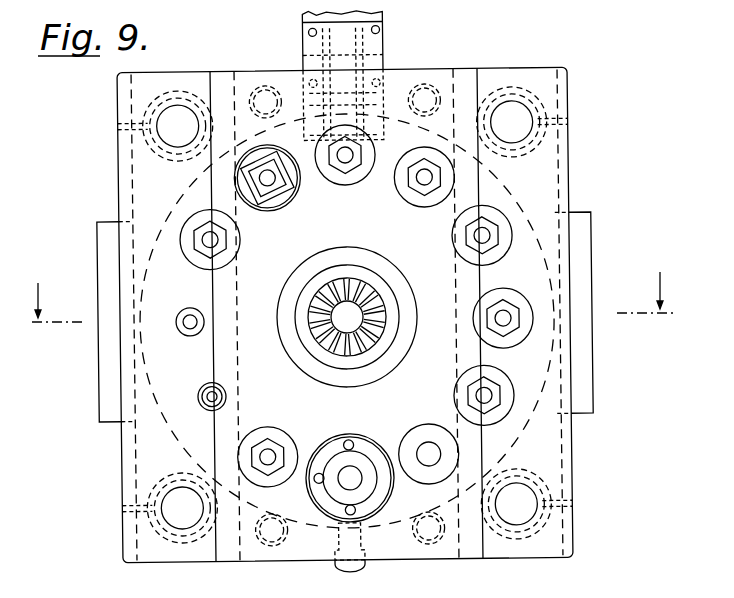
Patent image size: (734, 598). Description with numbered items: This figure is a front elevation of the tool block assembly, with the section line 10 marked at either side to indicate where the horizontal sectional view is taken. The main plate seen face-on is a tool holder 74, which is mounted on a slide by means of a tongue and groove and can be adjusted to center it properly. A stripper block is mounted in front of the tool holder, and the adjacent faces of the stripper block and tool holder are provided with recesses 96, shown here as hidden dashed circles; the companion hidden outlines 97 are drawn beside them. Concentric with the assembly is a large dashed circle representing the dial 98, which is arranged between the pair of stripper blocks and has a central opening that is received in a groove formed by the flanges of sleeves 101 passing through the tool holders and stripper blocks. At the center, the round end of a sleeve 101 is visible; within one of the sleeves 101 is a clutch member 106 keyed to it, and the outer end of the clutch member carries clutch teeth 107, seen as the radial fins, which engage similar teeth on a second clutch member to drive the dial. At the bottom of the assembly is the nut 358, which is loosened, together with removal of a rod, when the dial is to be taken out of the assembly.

The tool holder 74 is at (500, 70).
The recesses 96 is at (256, 90).
The hidden bores 97 is at (268, 86).
The dial 98 is at (524, 425).
The sleeves 101 is at (371, 356).
The clutch member 106 is at (370, 283).
The clutch teeth 107 is at (342, 278).
The nut 358 is at (370, 568).
The section line 10— 10 is at (353, 297).